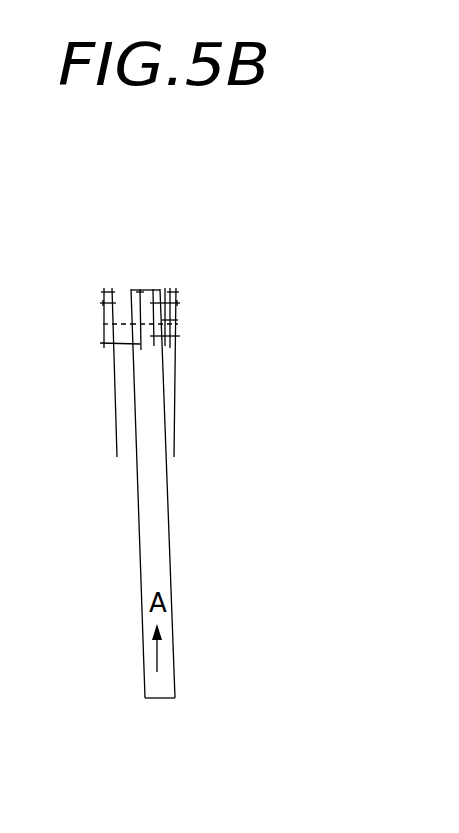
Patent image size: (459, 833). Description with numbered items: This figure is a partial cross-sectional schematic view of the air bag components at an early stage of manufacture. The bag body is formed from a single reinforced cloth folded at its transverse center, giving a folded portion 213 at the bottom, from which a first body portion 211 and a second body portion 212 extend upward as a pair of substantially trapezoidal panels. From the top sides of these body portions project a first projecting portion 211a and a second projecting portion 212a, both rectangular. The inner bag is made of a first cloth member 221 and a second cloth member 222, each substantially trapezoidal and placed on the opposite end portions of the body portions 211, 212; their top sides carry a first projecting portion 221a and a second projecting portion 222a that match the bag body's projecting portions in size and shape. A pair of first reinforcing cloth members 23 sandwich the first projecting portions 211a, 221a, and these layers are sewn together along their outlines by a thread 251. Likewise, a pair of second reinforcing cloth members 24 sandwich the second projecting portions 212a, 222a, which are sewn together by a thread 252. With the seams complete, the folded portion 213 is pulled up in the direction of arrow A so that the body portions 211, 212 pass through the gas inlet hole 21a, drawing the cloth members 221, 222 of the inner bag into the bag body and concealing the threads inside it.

The gas inlet hole 21a is at (148, 288).
The first body portion 211 is at (140, 537).
The first projecting portion 211a is at (140, 303).
The second body portion 212 is at (170, 540).
The second projecting portion 212a is at (178, 320).
The folded portion 213 is at (150, 699).
The first cloth member 221 is at (115, 412).
The first projecting portion 221a is at (103, 303).
The second cloth member 222 is at (177, 418).
The second projecting portion 222a is at (180, 303).
The first reinforcing cloth members 23 is at (103, 310).
The second reinforcing cloth members 24 is at (178, 302).
The thread 251 is at (122, 290).
The thread 252 is at (165, 290).